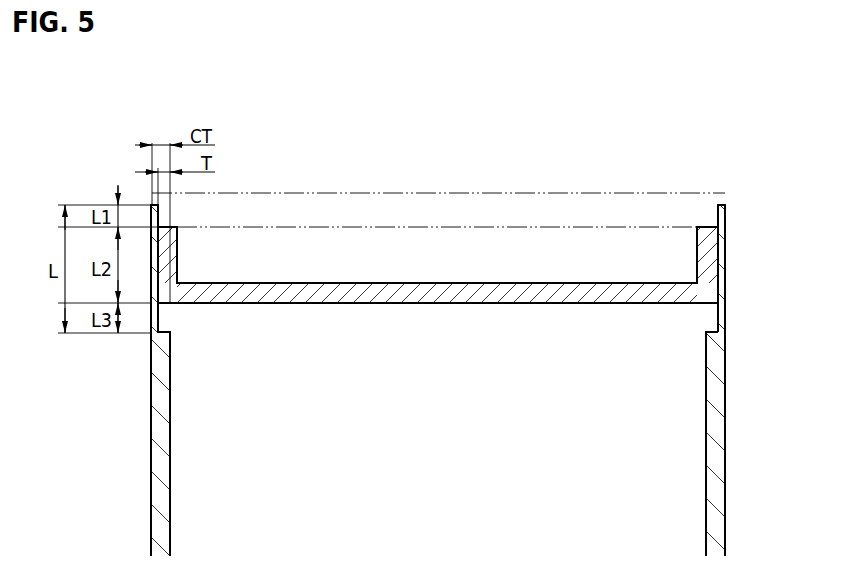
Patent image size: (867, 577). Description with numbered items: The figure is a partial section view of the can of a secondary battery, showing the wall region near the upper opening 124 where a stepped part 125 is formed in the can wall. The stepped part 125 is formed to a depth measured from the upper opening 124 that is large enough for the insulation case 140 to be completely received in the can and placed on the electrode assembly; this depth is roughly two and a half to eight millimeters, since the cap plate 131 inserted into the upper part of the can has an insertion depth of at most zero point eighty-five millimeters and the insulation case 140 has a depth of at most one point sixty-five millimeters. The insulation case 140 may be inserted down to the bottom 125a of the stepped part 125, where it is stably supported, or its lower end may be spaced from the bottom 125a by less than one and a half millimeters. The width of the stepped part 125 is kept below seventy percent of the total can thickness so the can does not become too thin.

The cap plate 131 is at (640, 199).
The upper opening 124 is at (722, 194).
The insulation case 140 is at (718, 234).
The stepped part 125 is at (717, 260).
The bottom of the stepped part 125a is at (708, 333).